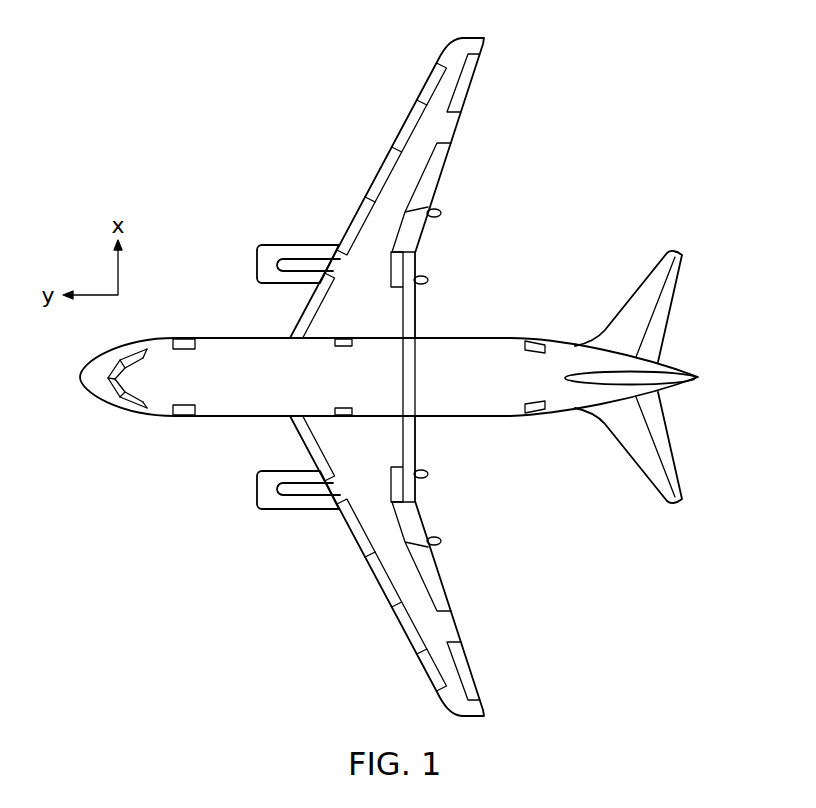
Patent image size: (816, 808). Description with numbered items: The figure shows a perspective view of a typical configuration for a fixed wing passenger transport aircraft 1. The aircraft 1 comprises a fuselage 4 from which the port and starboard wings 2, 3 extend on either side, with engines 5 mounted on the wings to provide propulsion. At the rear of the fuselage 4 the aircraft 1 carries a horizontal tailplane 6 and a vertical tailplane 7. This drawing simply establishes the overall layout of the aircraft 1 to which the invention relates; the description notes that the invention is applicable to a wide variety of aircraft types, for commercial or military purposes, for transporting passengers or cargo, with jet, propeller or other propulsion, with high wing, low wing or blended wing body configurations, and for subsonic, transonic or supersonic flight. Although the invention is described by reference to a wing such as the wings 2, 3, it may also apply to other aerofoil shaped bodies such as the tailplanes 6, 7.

The aircraft 1 is at (393, 377).
The port wing 2 is at (358, 545).
The starboard wing 3 is at (376, 180).
The fuselage 4 is at (245, 337).
The engines 5 is at (270, 252).
The horizontal tailplane 6 is at (637, 297).
The vertical tailplane 7 is at (625, 378).